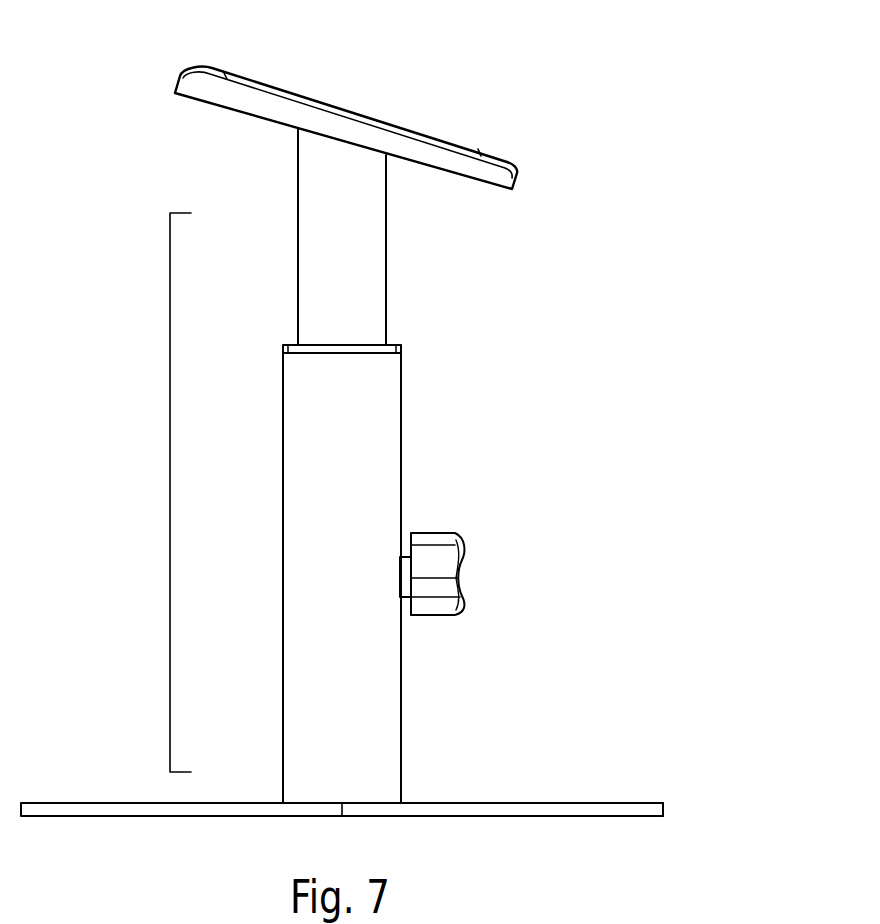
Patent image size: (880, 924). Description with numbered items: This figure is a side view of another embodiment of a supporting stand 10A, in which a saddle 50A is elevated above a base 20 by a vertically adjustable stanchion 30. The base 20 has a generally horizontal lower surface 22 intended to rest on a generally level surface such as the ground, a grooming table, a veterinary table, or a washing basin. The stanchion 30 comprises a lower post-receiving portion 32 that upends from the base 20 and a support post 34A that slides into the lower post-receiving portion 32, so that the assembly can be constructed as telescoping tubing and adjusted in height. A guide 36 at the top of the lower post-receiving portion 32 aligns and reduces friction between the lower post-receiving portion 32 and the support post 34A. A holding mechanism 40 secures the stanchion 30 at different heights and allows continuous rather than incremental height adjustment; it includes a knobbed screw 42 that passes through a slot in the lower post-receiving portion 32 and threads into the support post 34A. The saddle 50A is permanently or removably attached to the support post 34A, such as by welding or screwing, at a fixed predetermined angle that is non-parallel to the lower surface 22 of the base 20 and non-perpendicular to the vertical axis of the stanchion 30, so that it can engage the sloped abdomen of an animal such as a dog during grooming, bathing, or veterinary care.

The supporting stand 10A is at (686, 321).
The saddle 50A is at (192, 86).
The support post 34A is at (377, 250).
The guide 36 is at (388, 351).
The lower post-receiving portion 32 is at (293, 632).
The adjustable stanchion 30 is at (163, 492).
The holding mechanism 40 is at (441, 518).
The knobbed screw 42 is at (452, 548).
The base 20 is at (115, 808).
The lower surface 22 is at (640, 817).